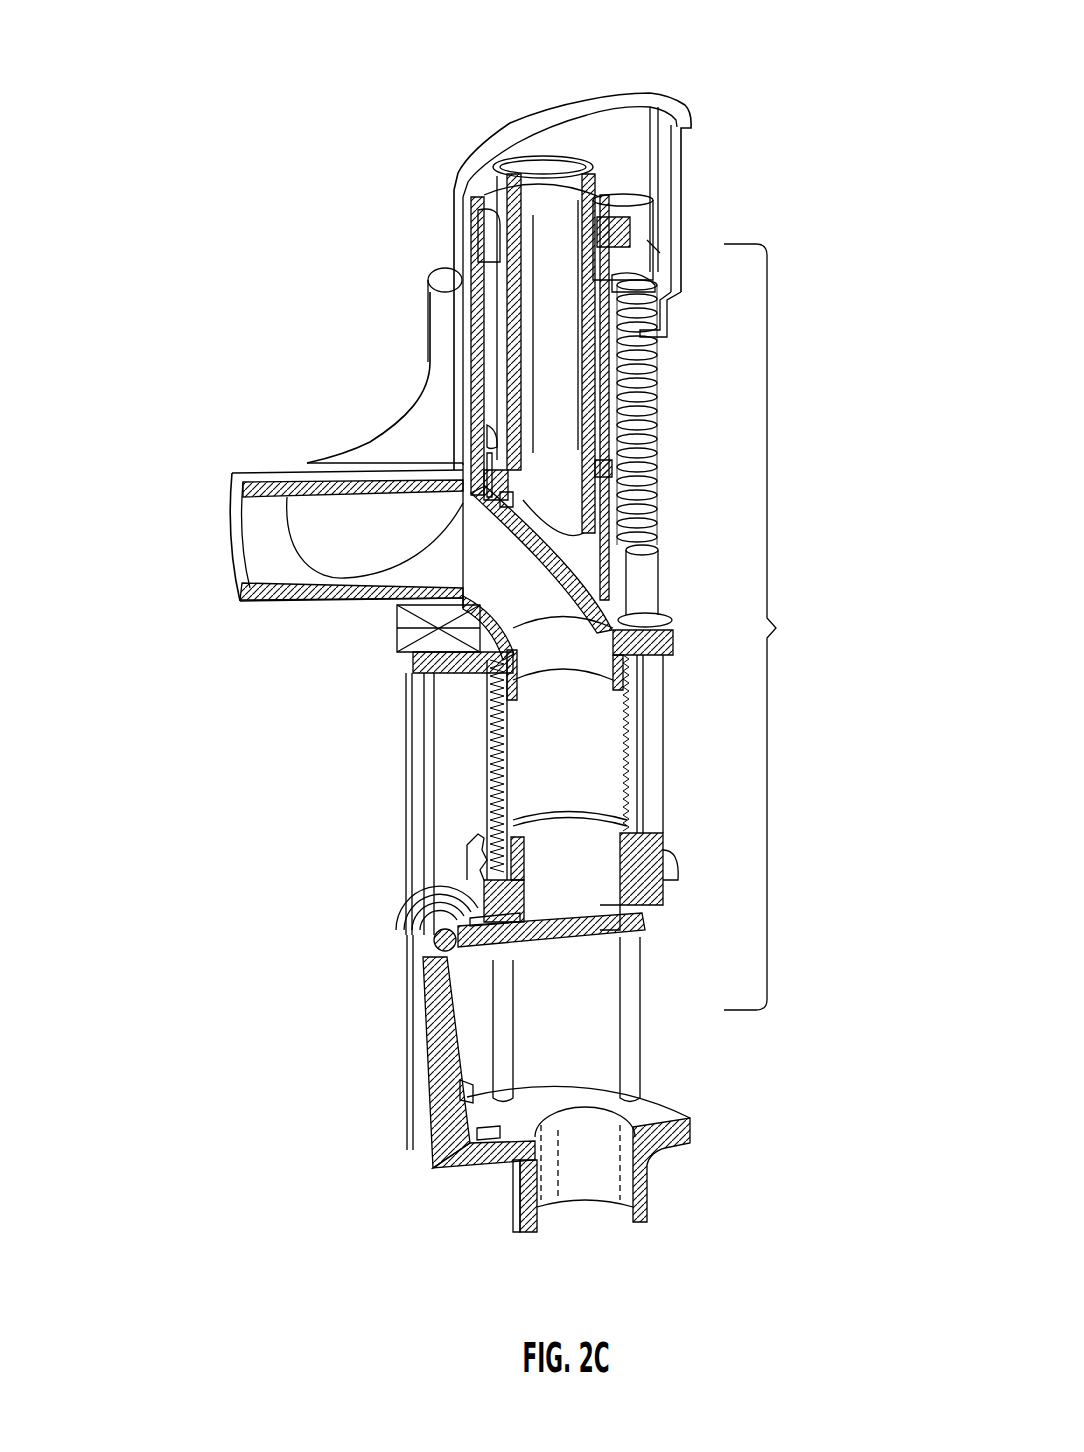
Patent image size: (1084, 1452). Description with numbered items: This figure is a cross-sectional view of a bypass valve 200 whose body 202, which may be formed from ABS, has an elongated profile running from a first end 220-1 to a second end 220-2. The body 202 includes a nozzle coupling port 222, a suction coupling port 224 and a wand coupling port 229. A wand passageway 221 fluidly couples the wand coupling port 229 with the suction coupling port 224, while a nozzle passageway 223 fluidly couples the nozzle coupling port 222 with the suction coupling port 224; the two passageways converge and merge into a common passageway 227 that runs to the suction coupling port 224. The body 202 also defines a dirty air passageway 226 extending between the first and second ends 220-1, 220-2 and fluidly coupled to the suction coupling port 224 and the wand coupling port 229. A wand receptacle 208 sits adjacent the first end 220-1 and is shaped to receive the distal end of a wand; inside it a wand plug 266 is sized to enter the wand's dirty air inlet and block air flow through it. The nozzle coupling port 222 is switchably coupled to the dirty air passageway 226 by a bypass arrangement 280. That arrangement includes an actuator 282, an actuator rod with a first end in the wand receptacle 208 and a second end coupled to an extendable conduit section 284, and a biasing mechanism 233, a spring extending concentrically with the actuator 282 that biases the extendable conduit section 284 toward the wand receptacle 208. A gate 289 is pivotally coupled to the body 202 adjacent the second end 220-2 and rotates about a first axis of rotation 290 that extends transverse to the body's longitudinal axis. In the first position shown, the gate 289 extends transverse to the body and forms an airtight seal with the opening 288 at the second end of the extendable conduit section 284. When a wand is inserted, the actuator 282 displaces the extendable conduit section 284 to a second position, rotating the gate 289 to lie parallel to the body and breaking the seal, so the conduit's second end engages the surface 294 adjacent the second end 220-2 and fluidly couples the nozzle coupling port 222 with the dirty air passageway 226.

The bypass valve 200 is at (390, 140).
The body 202 is at (690, 222).
The wand receptacle 208 is at (625, 97).
The first end 220-1 is at (493, 100).
The second end 220-2 is at (497, 1215).
The wand passageway 221 is at (388, 510).
The nozzle coupling port 222 is at (598, 1200).
The nozzle passageway 223 is at (490, 575).
The suction coupling port 224 is at (225, 572).
The dirty air passageway 226 is at (488, 598).
The common passageway 227 is at (285, 598).
The wand coupling port 229 is at (448, 262).
The biasing mechanism 233 is at (660, 490).
The wand plug 266 is at (580, 163).
The bypass arrangement 280 is at (785, 627).
The actuator 282 is at (660, 388).
The extendable conduit section 284 is at (481, 809).
The opening 288 is at (597, 905).
The gate 289 is at (608, 930).
The first axis of rotation 290 is at (478, 996).
The surface 294 is at (662, 1110).